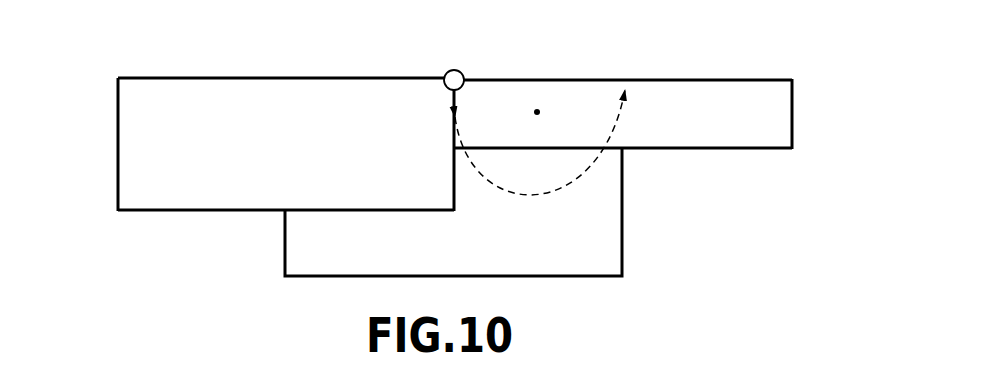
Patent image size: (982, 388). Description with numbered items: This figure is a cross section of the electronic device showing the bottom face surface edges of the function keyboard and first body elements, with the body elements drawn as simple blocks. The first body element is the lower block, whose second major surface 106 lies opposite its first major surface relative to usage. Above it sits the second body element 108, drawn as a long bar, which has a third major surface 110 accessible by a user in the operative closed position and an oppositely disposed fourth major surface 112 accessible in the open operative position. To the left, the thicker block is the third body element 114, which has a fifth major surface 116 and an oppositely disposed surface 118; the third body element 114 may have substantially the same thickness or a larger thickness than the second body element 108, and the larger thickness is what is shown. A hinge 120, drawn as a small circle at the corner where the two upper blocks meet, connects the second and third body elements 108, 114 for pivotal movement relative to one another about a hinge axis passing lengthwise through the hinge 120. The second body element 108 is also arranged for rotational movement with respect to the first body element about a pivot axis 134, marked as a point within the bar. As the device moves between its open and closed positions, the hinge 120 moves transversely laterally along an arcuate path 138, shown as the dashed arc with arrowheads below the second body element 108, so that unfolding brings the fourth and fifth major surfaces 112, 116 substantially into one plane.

The second major surface 106 is at (579, 281).
The second body element 108 is at (792, 113).
The third major surface 110 is at (716, 151).
The fourth major surface 112 is at (593, 76).
The third body element 114 is at (118, 125).
The fifth major surface 116 is at (198, 76).
The oppositely disposed surface 118 is at (222, 213).
The hinge 120 is at (454, 69).
The pivot axis 134 is at (535, 110).
The arcuate path 138 is at (587, 182).